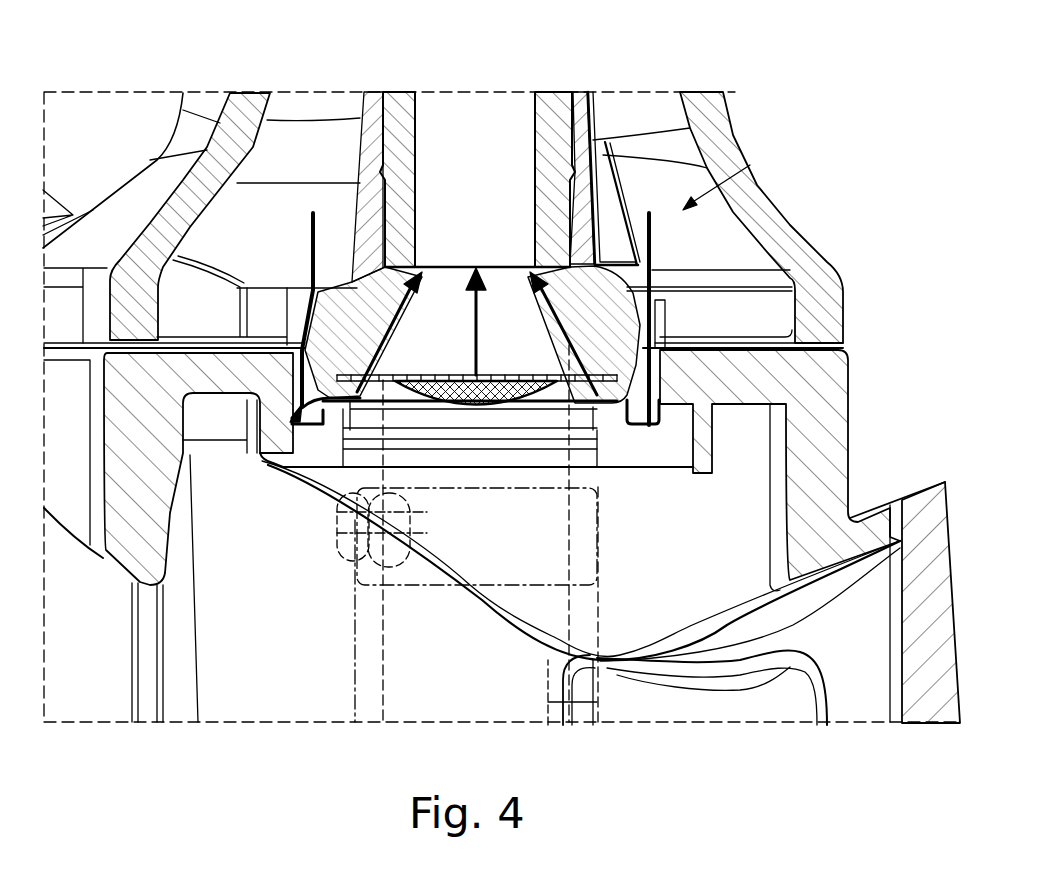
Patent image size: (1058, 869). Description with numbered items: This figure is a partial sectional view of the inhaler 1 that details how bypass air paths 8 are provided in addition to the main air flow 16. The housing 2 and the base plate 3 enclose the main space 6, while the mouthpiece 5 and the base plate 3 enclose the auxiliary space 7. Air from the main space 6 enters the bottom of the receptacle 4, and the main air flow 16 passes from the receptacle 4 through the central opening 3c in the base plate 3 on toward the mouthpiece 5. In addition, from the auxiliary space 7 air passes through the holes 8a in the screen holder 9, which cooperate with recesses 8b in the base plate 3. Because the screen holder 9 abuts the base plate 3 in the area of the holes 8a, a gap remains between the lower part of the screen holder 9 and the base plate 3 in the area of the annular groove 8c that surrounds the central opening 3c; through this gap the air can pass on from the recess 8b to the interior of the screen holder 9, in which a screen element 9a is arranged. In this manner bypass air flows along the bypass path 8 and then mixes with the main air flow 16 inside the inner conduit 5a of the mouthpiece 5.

The inhaler 1 is at (868, 148).
The housing 2 is at (930, 700).
The base plate 3 is at (825, 430).
The central opening 3c is at (462, 587).
The receptacle 4 is at (377, 705).
The mouthpiece 5 is at (767, 185).
The inner conduit 5a is at (550, 110).
The main space 6 is at (265, 690).
The auxiliary space 7 is at (747, 163).
The bypass air path 8 is at (313, 220).
The holes 8a is at (312, 296).
The recesses 8b is at (296, 428).
The annular groove 8c is at (335, 445).
The screen holder 9 is at (583, 140).
The filter mesh 9a is at (458, 405).
The main air flow 16 is at (478, 342).